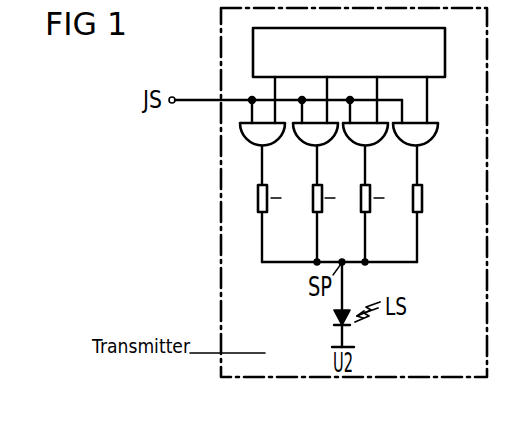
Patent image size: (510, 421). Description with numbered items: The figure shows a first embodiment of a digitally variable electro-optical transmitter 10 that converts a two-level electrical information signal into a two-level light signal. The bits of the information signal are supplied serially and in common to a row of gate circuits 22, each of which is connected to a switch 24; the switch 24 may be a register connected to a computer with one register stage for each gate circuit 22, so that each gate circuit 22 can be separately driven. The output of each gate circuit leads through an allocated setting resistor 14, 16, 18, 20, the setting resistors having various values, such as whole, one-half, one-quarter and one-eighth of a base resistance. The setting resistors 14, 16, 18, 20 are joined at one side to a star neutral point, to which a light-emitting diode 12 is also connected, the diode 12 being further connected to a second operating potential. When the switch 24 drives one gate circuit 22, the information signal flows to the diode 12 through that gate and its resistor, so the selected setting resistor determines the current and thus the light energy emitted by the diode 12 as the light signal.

The electro-optical transmitter 10 is at (232, 273).
The light-emitting diode 12 is at (333, 304).
The setting resistor 14 is at (416, 204).
The setting resistor 16 is at (371, 204).
The setting resistor 18 is at (322, 204).
The setting resistor 20 is at (265, 204).
The gate circuit 22 is at (393, 142).
The switch 24 is at (349, 52).